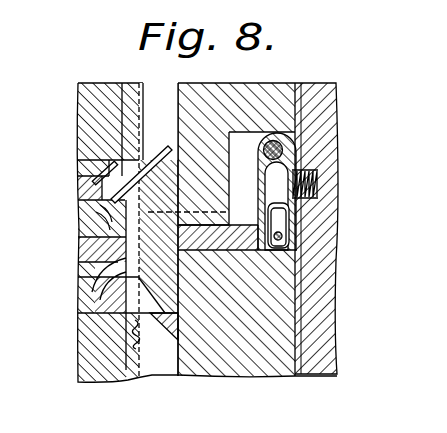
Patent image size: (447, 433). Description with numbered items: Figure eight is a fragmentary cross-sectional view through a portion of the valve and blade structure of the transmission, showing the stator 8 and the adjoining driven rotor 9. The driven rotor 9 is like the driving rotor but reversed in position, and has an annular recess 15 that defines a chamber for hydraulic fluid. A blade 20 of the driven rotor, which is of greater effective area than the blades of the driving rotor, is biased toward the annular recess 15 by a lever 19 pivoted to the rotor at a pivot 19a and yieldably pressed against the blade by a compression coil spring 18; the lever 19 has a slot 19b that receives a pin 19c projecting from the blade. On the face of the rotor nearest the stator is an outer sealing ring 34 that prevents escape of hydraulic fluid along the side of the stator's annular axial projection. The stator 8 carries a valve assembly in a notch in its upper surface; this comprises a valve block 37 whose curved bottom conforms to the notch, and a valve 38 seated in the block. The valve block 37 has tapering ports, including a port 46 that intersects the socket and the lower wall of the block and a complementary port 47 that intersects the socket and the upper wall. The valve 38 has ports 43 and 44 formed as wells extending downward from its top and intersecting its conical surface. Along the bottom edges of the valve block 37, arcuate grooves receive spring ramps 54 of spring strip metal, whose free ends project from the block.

The stator 8 is at (98, 352).
The driven rotor 9 is at (236, 357).
The annular recess 15 is at (164, 368).
The compression coil spring 18 is at (320, 178).
The lever 19 is at (286, 157).
The pivot 19a is at (278, 150).
The slot 19b is at (283, 213).
The pin 19c is at (290, 234).
The blade 20 is at (233, 258).
The outer sealing ring 34 is at (101, 384).
The valve block 37 is at (78, 153).
The valve 38 is at (80, 237).
The port 43 is at (80, 277).
The port 44 is at (82, 210).
The port 46 is at (108, 292).
The port 47 is at (112, 180).
The spring ramp 54 is at (143, 157).